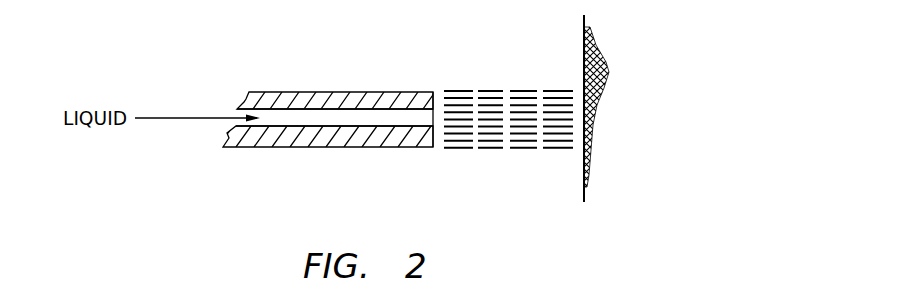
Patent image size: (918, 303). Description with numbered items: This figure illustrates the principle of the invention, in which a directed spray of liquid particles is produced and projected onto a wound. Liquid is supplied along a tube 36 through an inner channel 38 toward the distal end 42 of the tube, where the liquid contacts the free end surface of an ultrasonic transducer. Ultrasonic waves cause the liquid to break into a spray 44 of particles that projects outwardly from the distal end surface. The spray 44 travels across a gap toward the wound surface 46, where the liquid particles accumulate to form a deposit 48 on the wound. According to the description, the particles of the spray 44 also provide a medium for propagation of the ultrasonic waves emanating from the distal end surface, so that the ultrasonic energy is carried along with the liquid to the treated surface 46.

The nozzle tube 36 is at (338, 98).
The liquid channel 38 is at (287, 118).
The nozzle outlet end 42 is at (434, 147).
The spray droplets 44 is at (492, 98).
The substrate 46 is at (583, 43).
The deposited coating 48 is at (601, 72).